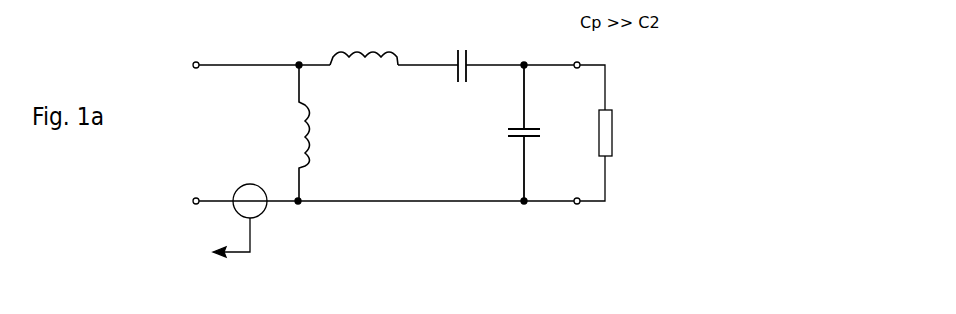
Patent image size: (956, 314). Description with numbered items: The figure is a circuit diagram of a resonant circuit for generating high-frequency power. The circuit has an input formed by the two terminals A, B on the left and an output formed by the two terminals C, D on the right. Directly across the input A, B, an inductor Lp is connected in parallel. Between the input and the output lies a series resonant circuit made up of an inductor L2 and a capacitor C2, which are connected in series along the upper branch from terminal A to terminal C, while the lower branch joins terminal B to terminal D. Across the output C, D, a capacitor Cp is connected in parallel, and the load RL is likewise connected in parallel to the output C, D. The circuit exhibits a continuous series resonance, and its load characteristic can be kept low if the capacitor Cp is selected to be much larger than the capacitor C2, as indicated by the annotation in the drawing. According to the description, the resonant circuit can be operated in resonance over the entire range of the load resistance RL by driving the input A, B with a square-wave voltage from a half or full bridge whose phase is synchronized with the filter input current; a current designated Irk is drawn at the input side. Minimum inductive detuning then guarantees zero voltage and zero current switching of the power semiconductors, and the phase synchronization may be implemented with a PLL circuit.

The input terminal A is at (297, 46).
The input terminal B is at (298, 221).
The output terminal C is at (523, 46).
The output terminal D is at (523, 221).
The inductor L2 is at (364, 46).
The capacitor C2 is at (459, 55).
The inductor Lp is at (288, 133).
The capacitor Cp is at (541, 133).
The load RL is at (625, 133).
The current source Irk is at (226, 223).